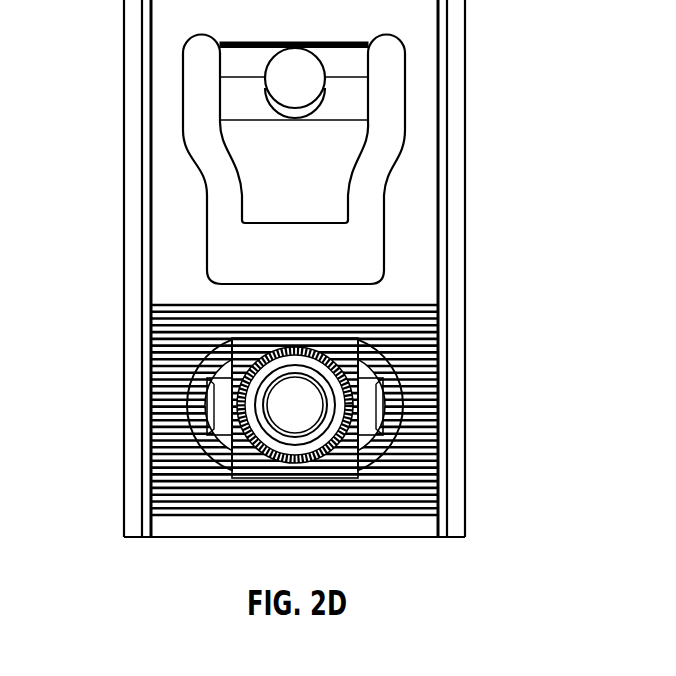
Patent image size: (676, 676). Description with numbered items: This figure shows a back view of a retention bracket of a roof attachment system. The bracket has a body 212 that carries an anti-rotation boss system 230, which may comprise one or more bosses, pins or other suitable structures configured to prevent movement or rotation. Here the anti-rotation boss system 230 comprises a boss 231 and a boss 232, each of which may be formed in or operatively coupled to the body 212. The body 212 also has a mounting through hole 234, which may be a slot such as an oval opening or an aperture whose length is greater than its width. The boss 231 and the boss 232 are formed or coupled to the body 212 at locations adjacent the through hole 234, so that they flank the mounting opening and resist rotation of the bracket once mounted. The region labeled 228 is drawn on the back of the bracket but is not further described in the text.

The body 212 is at (465, 97).
The mounting plate 228 is at (395, 517).
The anti-rotation boss system 230 is at (124, 322).
The boss 231 is at (403, 403).
The boss 232 is at (185, 398).
The through hole 234 is at (286, 402).